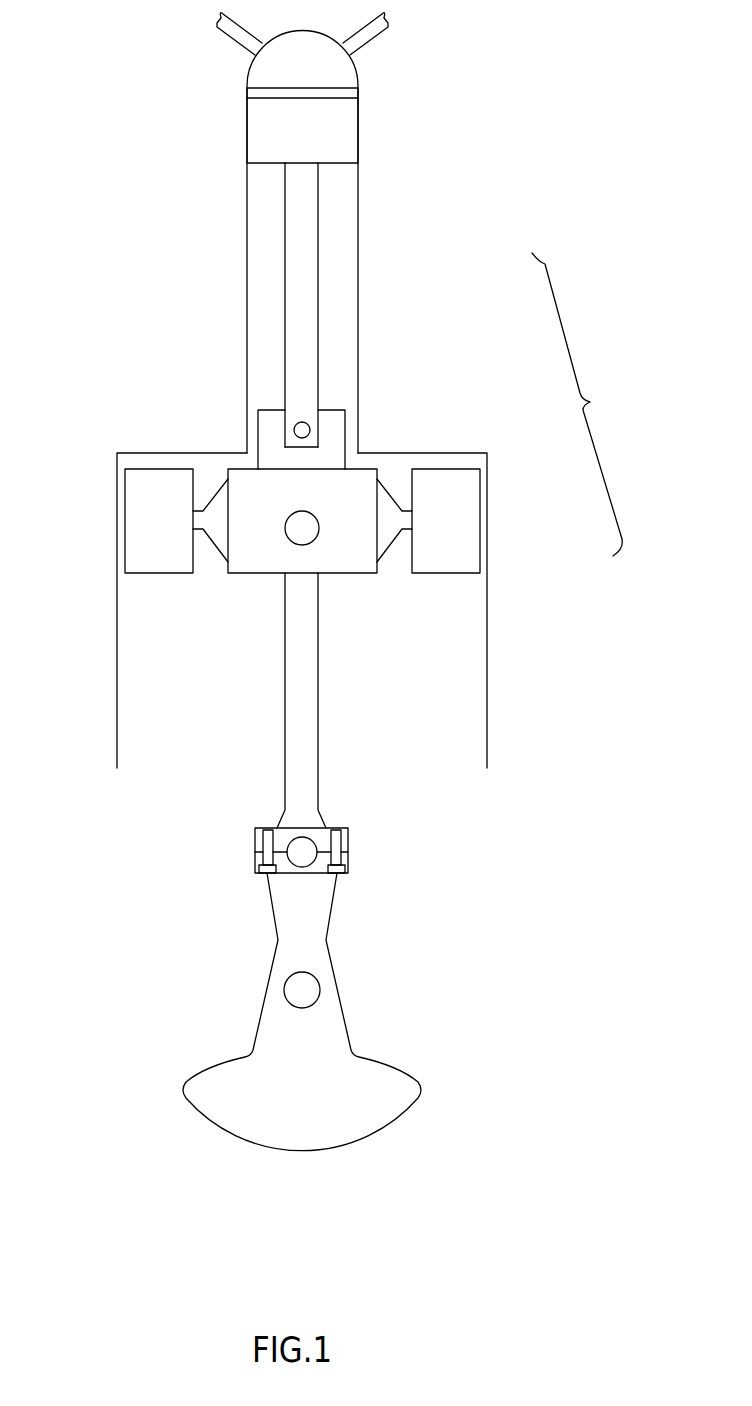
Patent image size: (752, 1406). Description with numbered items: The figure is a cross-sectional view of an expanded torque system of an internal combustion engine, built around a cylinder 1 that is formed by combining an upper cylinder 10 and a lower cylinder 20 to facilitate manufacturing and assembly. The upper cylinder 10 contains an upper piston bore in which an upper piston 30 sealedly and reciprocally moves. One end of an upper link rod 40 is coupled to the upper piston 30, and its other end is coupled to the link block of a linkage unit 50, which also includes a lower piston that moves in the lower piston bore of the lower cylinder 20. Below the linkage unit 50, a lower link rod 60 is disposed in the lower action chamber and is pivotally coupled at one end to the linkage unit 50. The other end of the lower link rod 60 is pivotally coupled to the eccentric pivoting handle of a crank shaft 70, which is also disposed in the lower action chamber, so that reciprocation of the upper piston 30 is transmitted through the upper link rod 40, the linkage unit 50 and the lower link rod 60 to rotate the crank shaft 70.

The cylinder 1 is at (577, 404).
The upper cylinder 10 is at (391, 294).
The lower cylinder 20 is at (526, 563).
The upper piston 30 is at (257, 128).
The upper link rod 40 is at (257, 290).
The linkage unit 50 is at (205, 450).
The lower link rod 60 is at (274, 692).
The crank shaft 70 is at (371, 965).